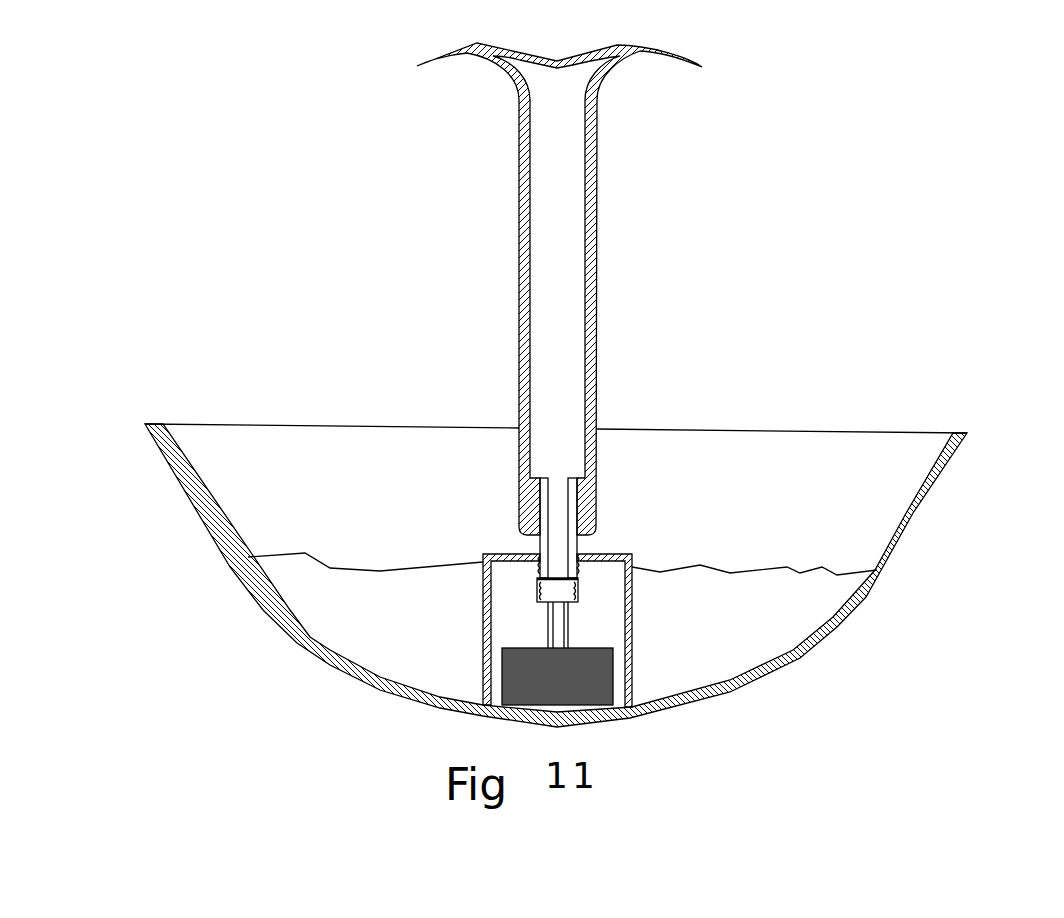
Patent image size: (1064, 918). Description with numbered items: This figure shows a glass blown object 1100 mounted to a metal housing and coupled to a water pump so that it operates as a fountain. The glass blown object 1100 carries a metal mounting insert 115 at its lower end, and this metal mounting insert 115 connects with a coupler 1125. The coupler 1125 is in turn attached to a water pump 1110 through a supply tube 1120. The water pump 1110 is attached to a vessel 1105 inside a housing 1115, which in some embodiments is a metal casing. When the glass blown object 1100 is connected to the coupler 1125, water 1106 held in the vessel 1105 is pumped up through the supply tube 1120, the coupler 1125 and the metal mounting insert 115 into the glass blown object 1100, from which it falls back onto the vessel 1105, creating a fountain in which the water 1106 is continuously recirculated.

The glass blown object 1100 is at (570, 268).
The vessel 1105 is at (943, 413).
The water 1106 is at (317, 583).
The metal mounting insert 115 is at (557, 542).
The coupler 1125 is at (537, 590).
The supply tube 1120 is at (557, 632).
The housing 1115 is at (613, 607).
The water pump 1110 is at (592, 683).